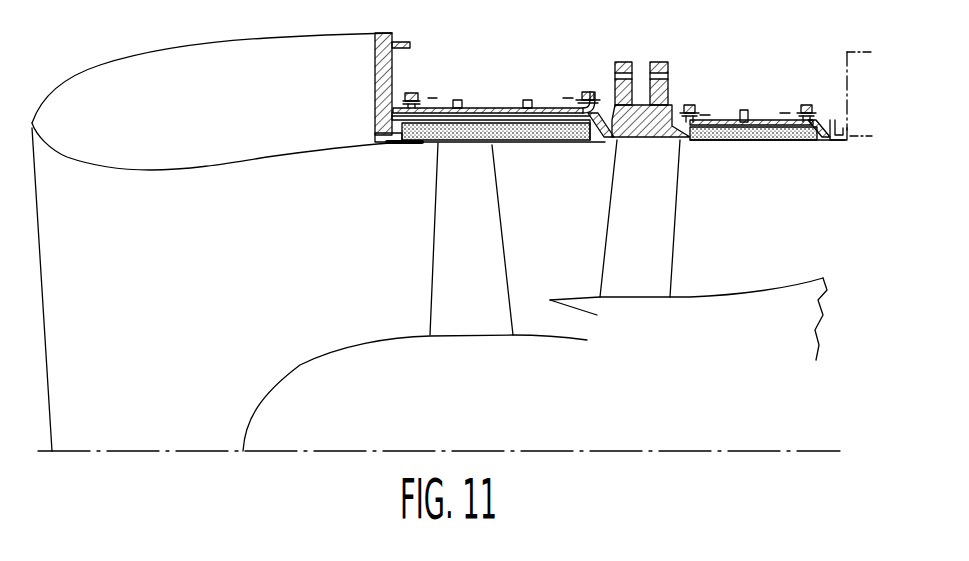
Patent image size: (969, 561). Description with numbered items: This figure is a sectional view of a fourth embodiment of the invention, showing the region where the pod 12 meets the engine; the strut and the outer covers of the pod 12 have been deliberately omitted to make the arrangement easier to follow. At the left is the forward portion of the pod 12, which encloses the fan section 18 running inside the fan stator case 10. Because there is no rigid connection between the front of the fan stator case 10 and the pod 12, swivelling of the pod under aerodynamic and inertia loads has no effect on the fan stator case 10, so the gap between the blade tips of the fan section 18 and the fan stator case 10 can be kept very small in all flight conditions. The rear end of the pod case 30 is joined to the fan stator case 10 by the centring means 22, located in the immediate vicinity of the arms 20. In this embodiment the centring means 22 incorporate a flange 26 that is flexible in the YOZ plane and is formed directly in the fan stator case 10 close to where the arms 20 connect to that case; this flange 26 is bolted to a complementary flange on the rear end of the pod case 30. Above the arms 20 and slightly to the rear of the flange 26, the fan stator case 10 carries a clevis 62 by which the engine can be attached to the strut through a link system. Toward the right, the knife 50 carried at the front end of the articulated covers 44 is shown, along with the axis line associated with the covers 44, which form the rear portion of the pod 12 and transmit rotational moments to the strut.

The fan stator case 10 is at (530, 142).
The pod 12 is at (157, 50).
The fan section 18 is at (443, 217).
The arms 20 is at (638, 224).
The centring means 22 is at (578, 76).
The flange 26 is at (603, 100).
The pod case 30 is at (487, 110).
The covers 44 is at (847, 50).
The knife 50 is at (830, 118).
The clevis 62 is at (625, 62).